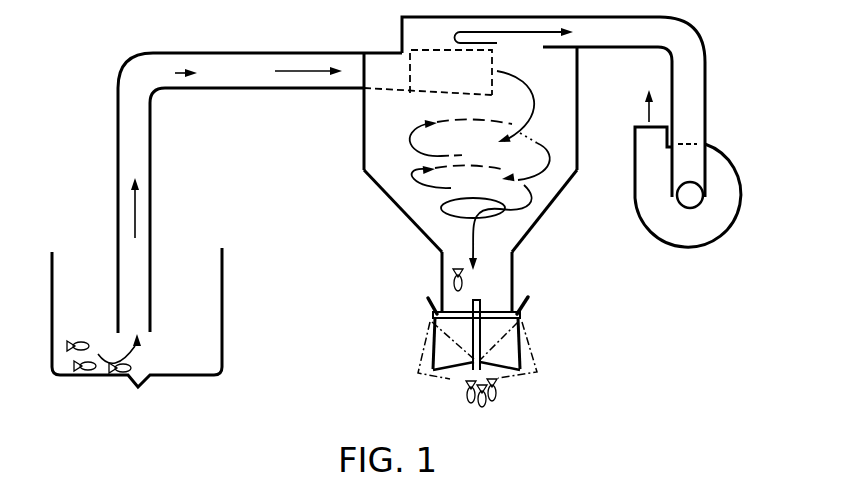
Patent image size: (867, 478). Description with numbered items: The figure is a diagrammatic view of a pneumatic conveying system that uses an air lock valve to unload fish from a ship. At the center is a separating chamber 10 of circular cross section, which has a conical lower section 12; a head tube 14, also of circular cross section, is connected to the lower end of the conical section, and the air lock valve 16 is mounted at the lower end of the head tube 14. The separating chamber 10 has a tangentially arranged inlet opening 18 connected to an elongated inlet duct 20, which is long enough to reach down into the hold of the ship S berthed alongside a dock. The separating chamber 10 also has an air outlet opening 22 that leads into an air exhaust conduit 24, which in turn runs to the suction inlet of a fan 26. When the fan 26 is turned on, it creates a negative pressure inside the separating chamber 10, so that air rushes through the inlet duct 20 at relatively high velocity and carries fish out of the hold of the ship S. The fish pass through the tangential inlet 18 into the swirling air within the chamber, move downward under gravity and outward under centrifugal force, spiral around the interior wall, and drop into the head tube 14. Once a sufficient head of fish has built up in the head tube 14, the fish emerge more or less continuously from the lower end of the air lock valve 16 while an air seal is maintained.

The separating chamber 10 is at (486, 143).
The conical lower section 12 is at (402, 212).
The head tube 14 is at (441, 273).
The air lock valve 16 is at (410, 338).
The tangentially arranged inlet opening 18 is at (410, 52).
The inlet duct 20 is at (240, 53).
The air outlet opening 22 is at (510, 25).
The air exhaust conduit 24 is at (693, 50).
The fan 26 is at (718, 162).
The ship S is at (224, 297).